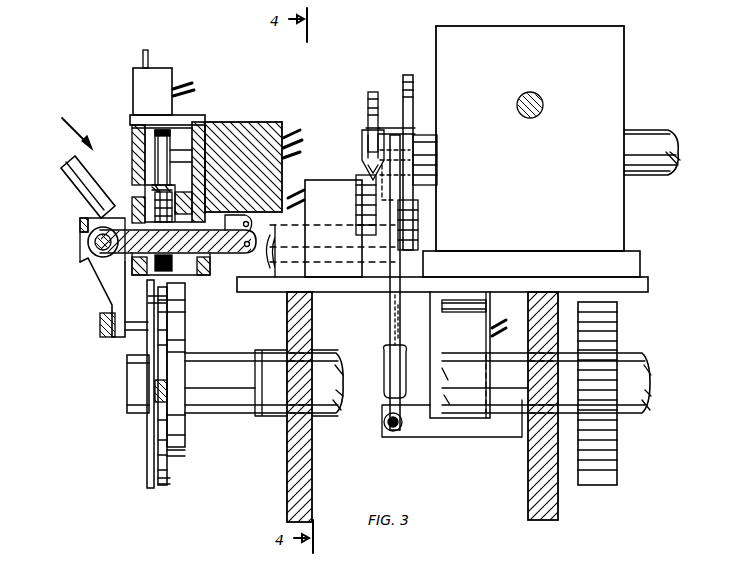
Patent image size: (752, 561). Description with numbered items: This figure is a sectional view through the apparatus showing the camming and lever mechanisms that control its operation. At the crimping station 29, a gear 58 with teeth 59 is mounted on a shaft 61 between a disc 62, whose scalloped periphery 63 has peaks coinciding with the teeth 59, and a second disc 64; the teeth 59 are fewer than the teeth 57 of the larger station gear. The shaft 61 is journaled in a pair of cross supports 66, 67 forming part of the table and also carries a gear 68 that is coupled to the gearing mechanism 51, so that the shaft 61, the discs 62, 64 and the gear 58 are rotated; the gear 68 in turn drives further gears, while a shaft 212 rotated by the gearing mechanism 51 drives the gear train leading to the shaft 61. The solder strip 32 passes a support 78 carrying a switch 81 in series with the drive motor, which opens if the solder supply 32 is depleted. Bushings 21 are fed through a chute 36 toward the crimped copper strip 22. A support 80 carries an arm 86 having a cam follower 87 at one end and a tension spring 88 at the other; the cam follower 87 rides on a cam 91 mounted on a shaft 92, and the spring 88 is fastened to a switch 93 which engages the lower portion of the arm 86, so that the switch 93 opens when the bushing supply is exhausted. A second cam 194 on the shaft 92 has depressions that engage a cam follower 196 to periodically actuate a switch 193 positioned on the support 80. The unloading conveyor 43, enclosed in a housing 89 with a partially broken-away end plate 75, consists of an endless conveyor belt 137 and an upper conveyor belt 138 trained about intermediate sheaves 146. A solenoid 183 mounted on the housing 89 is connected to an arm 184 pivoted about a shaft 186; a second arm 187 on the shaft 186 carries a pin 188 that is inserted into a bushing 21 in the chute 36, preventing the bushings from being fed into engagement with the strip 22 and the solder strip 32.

The bushing 21 is at (172, 205).
The crimped copper strip 22 is at (152, 187).
The crimping station 29 is at (136, 411).
The solder strip 32 is at (143, 61).
The chute 36 is at (70, 162).
The unloading conveyor 43 is at (64, 123).
The gearing mechanism 51 is at (620, 50).
The teeth 57 is at (170, 390).
The gear 58 is at (158, 466).
The teeth 59 is at (155, 388).
The shaft 61 is at (264, 352).
The disc 62 is at (170, 480).
The scalloped periphery 63 is at (172, 453).
The second disc 64 is at (148, 440).
The cross support 66 is at (307, 318).
The cross support 67 is at (528, 447).
The gear 68 is at (596, 485).
The end plate 75 is at (182, 130).
The support 78 is at (132, 123).
The support 80 is at (648, 280).
The switch 81 is at (136, 80).
The arm 86 is at (390, 405).
The cam follower 87 is at (412, 155).
The tension spring 88 is at (386, 426).
The housing 89 is at (203, 135).
The cam 91 is at (410, 76).
The shaft 92 is at (418, 185).
The switch 93 is at (488, 304).
The endless conveyor belt 137 is at (165, 271).
The upper conveyor belt 138 is at (132, 130).
The intermediate sheave 146 is at (158, 147).
The solenoid 183 is at (240, 125).
The arm 184 is at (217, 253).
The shaft 186 is at (88, 246).
The second arm 187 is at (96, 290).
The pin 188 is at (138, 330).
The switch 193 is at (336, 190).
The cam 194 is at (379, 82).
The cam follower 196 is at (368, 145).
The shaft 212 is at (636, 136).